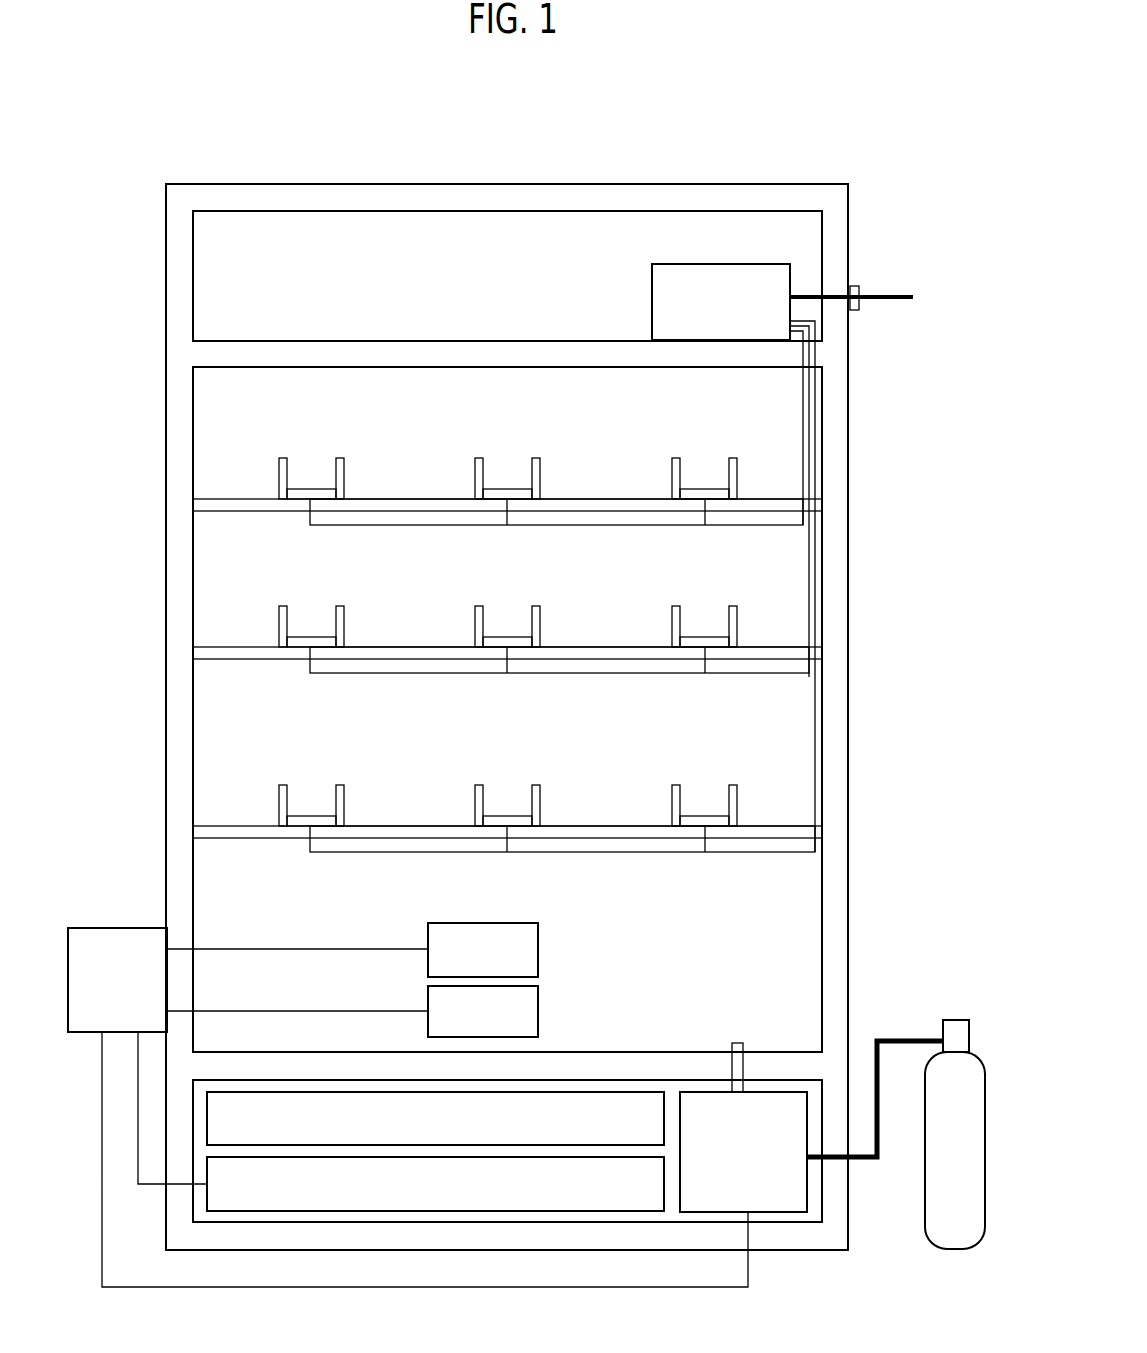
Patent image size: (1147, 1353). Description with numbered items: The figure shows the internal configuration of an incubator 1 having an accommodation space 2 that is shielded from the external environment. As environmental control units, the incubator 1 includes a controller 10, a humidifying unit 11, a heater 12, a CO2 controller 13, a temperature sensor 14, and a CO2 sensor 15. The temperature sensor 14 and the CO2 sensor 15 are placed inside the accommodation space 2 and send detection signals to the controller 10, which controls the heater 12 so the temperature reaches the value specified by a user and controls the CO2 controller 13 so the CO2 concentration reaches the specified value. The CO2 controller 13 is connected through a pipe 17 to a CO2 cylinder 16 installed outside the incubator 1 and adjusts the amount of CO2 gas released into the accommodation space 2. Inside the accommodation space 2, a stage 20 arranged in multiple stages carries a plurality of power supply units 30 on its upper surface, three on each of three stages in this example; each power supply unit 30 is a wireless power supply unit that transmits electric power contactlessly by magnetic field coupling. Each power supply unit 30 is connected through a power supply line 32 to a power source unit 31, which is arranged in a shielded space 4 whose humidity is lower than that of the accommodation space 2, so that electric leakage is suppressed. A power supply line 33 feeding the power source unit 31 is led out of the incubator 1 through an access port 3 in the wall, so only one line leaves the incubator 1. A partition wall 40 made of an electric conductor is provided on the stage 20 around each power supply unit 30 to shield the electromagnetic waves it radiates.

The incubator 1 is at (793, 184).
The accommodation space 2 is at (208, 416).
The access port 3 is at (855, 284).
The shielded space 4 is at (208, 270).
The controller 10 is at (118, 927).
The humidifying unit 11 is at (605, 1100).
The heater 12 is at (648, 1165).
The CO2 controller 13 is at (779, 1098).
The temperature sensor 14 is at (538, 949).
The CO2 sensor 15 is at (538, 1011).
The CO2 cylinder 16 is at (955, 1250).
The pipe 17 is at (905, 1038).
The stage 20 is at (214, 499).
The power supply unit 30 is at (309, 489).
The power source unit 31 is at (652, 304).
The power supply line 32 is at (580, 526).
The power supply line 33 is at (893, 300).
The partition wall 40 is at (282, 458).